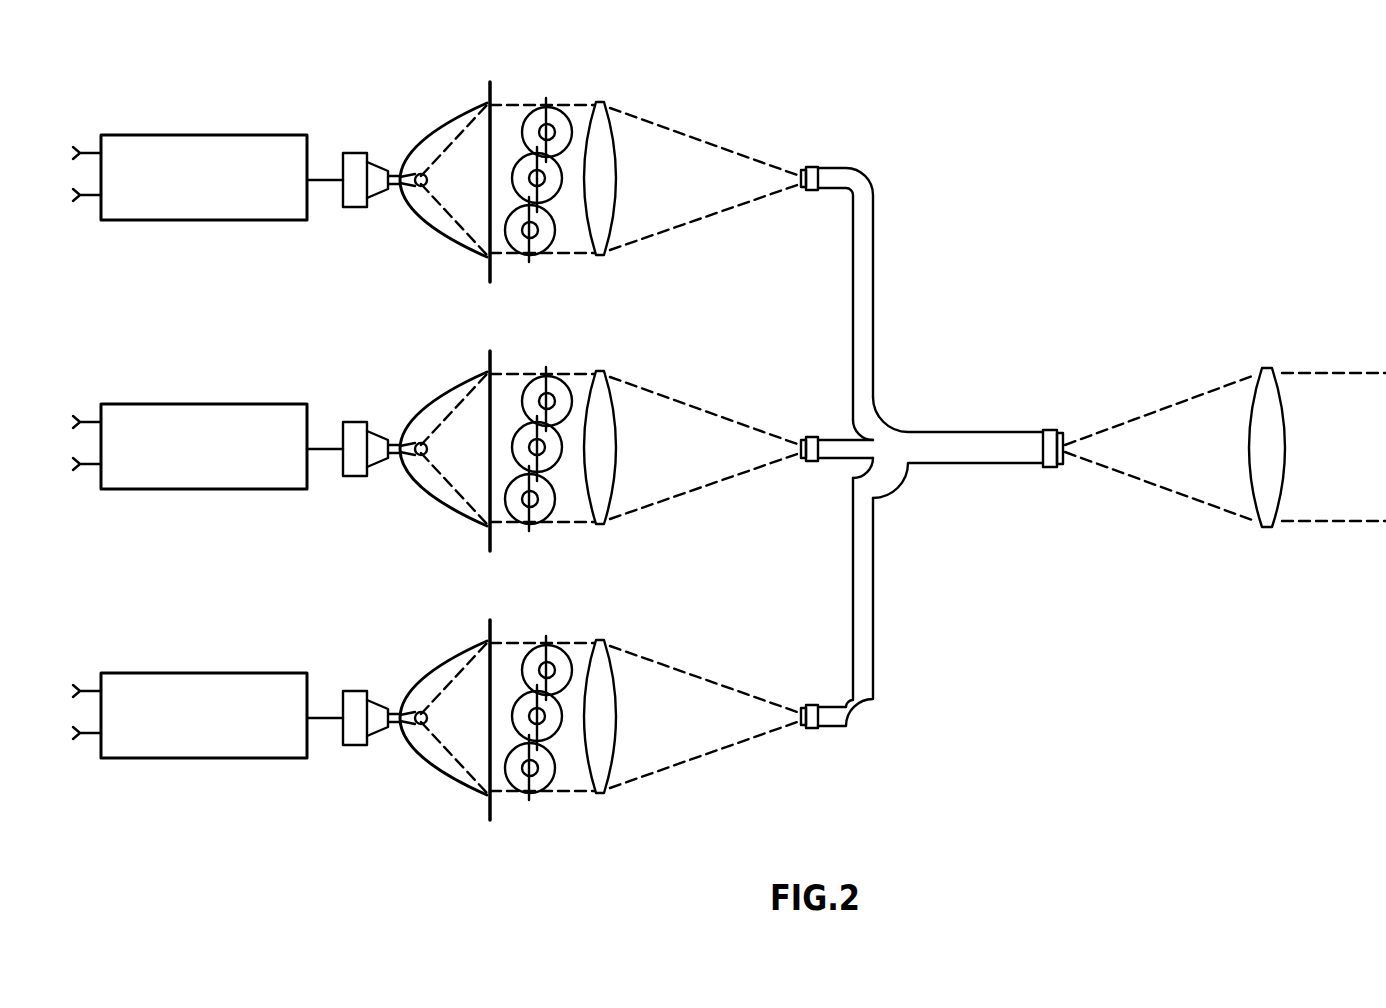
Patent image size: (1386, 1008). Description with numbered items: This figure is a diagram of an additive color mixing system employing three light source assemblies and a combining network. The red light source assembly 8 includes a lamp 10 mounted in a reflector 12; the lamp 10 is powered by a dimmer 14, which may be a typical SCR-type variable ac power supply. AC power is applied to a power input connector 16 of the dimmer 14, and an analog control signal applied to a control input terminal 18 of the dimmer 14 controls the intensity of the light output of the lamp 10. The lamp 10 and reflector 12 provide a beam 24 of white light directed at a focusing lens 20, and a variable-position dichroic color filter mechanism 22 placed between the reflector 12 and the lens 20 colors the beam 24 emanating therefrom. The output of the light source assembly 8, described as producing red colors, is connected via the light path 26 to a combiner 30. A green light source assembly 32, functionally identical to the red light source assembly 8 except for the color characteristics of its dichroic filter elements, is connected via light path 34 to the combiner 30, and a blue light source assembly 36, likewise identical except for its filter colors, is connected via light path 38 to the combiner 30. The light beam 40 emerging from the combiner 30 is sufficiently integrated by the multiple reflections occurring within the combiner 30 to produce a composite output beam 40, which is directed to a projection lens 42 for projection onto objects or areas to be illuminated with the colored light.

The light source assembly 8 is at (436, 72).
The lamp 10 is at (418, 187).
The reflector 12 is at (487, 256).
The dimmer 14 is at (210, 135).
The power input connector 16 is at (88, 195).
The control input terminal 18 is at (88, 153).
The focusing lens 20 is at (612, 180).
The variable-position dichroic color filter mechanism 22 is at (548, 100).
The beam 24 is at (560, 254).
The light path 26 is at (830, 167).
The combiner 30 is at (1050, 430).
The green light source assembly 32 is at (426, 373).
The light path 34 is at (831, 438).
The blue light source assembly 36 is at (428, 631).
The light path 38 is at (828, 728).
The output beam 40 is at (1160, 483).
The projection lens 42 is at (1282, 448).